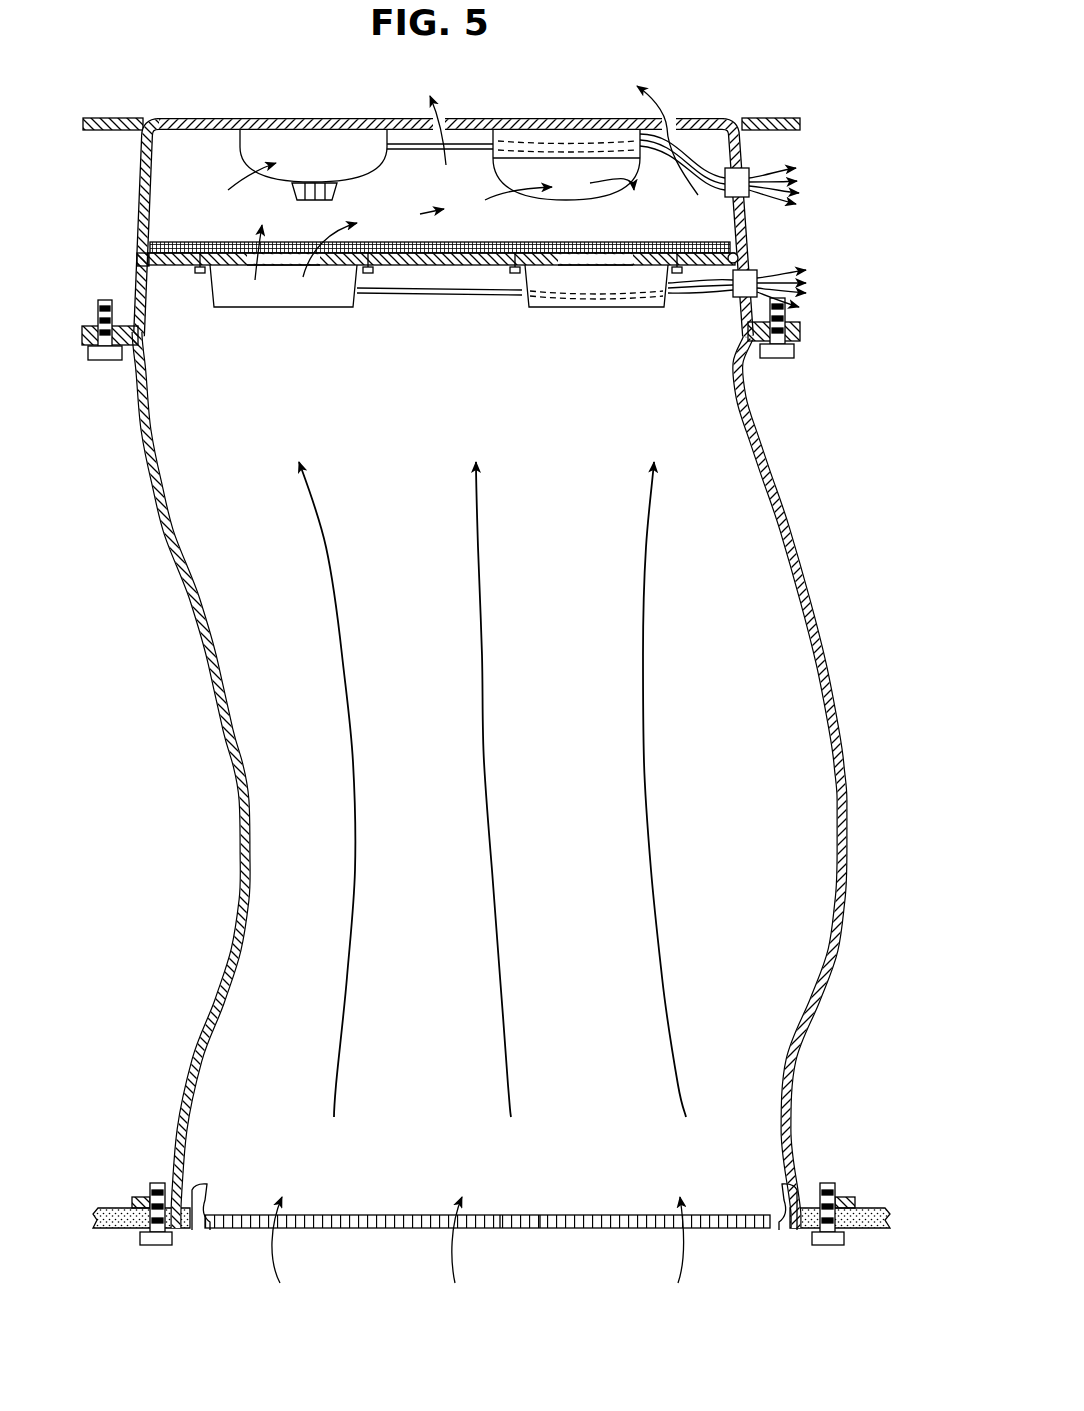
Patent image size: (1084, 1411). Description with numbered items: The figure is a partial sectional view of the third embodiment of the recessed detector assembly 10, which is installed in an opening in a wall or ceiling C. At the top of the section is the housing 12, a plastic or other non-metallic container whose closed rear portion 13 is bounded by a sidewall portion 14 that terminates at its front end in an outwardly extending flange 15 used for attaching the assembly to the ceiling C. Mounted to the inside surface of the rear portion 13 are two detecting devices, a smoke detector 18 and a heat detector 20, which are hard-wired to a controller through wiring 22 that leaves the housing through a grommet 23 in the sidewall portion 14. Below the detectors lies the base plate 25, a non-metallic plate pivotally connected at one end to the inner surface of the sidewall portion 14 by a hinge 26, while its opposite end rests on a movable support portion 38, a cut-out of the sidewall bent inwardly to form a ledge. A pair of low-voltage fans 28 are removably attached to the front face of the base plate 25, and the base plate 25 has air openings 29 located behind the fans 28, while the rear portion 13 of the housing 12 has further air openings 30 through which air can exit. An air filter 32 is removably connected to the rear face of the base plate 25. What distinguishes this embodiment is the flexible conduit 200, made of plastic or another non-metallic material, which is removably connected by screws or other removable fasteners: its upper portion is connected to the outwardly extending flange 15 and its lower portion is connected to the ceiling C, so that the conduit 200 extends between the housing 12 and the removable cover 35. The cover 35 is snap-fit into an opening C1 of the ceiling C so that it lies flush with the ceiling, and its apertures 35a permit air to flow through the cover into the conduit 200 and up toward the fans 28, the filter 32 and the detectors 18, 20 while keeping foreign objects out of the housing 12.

The detector assembly 10 is at (448, 176).
The housing 12 is at (448, 186).
The rear portion 13 is at (521, 117).
The sidewall portion 14 is at (133, 231).
The outwardly extending flange 15 is at (795, 349).
The smoke detector 18 is at (238, 174).
The heat detector 20 is at (495, 174).
The wiring 22 is at (692, 186).
The grommet 23 is at (750, 175).
The base plate 25 is at (394, 253).
The hinge 26 is at (740, 262).
The low-voltage fans 28 is at (283, 298).
The air openings 29 is at (288, 258).
The air openings 30 is at (219, 117).
The air filter 32 is at (477, 254).
The removable cover 35 is at (611, 1232).
The apertures 35a is at (521, 1232).
The movable support portion 38 is at (149, 272).
The flexible conduit 200 is at (240, 718).
The ceiling C is at (865, 1207).
The opening C1 is at (197, 1232).